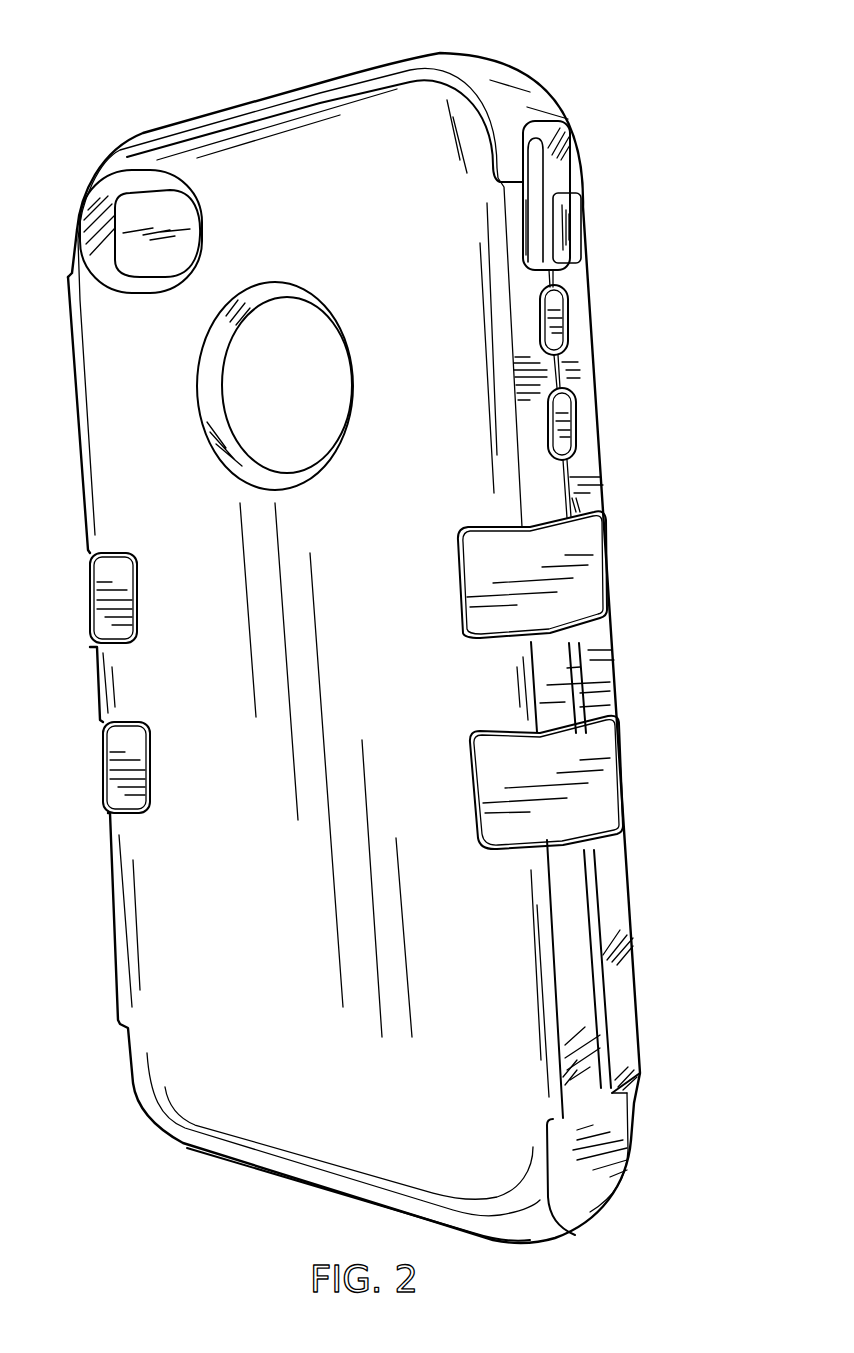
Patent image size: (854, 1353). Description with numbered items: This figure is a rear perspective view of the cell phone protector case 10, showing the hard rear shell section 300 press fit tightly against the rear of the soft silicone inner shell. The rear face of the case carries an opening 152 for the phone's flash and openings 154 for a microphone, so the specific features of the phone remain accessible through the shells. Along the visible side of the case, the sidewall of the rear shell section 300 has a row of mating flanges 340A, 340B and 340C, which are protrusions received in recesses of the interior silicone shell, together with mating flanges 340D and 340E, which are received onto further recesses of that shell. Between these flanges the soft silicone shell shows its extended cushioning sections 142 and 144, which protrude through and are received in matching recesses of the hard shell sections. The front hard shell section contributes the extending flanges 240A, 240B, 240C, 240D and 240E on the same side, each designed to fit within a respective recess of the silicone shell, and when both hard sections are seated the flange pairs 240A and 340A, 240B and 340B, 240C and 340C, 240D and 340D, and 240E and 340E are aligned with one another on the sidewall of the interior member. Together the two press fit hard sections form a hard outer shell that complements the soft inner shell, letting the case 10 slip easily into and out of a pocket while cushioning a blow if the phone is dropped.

The cell phone protector case 10 is at (600, 79).
The rear shell section 300 is at (372, 120).
The opening for a flash 152 is at (132, 185).
The openings for a microphone 154 is at (280, 297).
The mating flange 340A is at (540, 268).
The extending flange 240A is at (577, 325).
The mating flange 340B is at (543, 367).
The extending flange 240B is at (585, 415).
The mating flange 340C is at (547, 470).
The extending flange 240C is at (587, 500).
The extended cushioning section 142 is at (590, 592).
The mating flange 340D is at (567, 668).
The extending flange 240D is at (603, 705).
The extended cushioning section 144 is at (603, 805).
The mating flange 340E is at (580, 893).
The extending flange 240E is at (622, 1023).